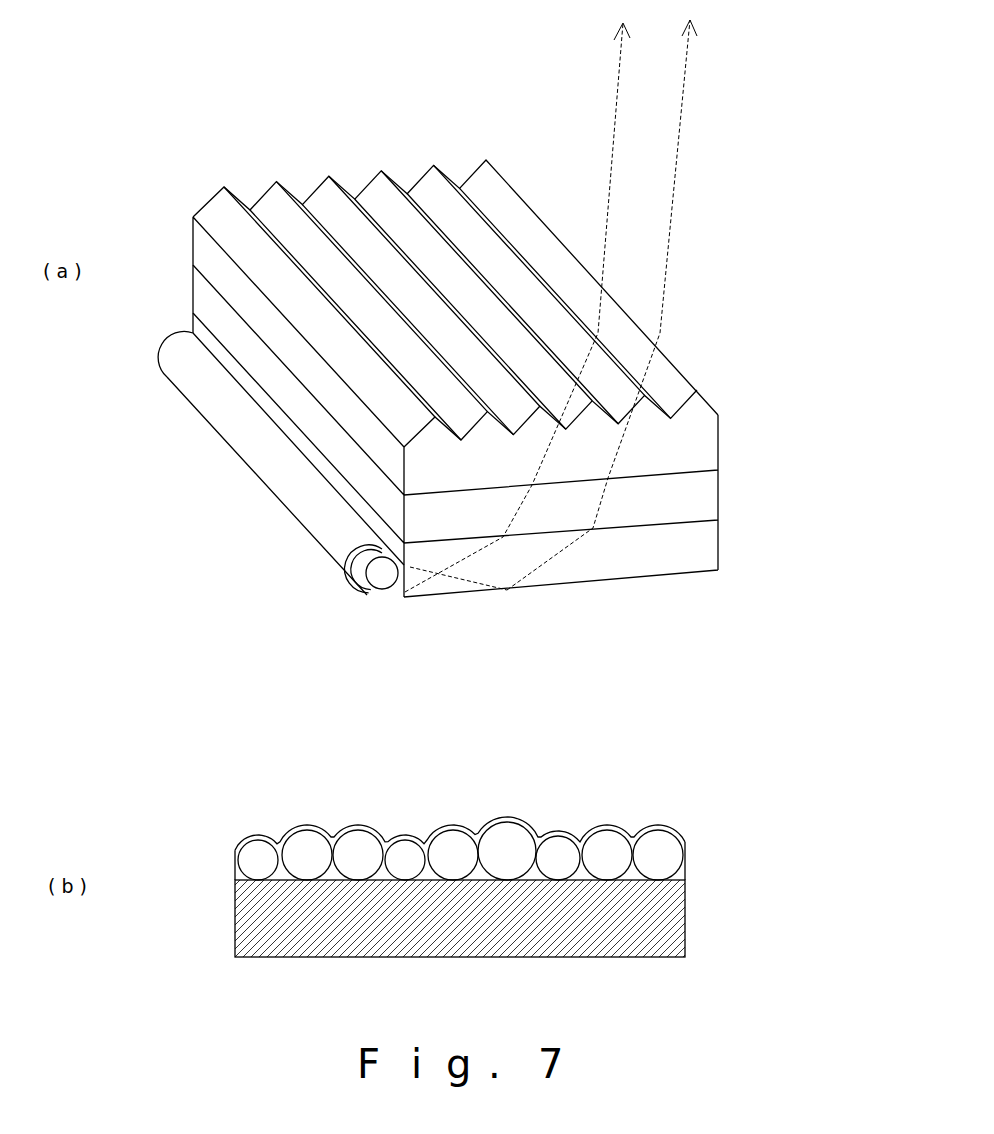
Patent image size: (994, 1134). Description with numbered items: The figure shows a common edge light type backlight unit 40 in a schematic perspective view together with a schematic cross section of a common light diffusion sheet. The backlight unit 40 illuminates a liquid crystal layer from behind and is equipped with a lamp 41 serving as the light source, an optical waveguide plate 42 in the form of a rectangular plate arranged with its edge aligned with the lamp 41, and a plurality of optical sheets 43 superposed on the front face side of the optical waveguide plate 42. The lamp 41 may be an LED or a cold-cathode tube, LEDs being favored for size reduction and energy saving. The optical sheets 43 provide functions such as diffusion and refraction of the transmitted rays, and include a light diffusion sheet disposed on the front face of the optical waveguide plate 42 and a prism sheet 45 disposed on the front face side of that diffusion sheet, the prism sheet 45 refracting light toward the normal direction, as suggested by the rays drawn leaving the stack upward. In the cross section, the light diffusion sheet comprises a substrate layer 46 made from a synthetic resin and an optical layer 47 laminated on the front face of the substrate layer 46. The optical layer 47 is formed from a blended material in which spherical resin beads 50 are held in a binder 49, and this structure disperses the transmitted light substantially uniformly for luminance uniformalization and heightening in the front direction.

The edge light type backlight unit 40 is at (265, 153).
The lamp 41 is at (382, 573).
The optical waveguide plate 42 is at (702, 553).
The optical sheets 43 is at (805, 434).
The prism sheet 45 is at (702, 449).
The substrate layer 46 is at (686, 914).
The optical layer 47 is at (686, 853).
The binder 49 is at (424, 838).
The spherical resin beads 50 is at (508, 838).